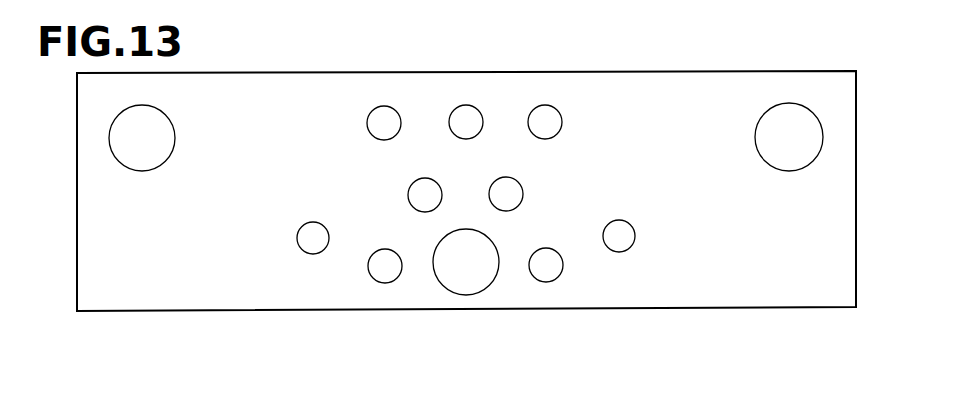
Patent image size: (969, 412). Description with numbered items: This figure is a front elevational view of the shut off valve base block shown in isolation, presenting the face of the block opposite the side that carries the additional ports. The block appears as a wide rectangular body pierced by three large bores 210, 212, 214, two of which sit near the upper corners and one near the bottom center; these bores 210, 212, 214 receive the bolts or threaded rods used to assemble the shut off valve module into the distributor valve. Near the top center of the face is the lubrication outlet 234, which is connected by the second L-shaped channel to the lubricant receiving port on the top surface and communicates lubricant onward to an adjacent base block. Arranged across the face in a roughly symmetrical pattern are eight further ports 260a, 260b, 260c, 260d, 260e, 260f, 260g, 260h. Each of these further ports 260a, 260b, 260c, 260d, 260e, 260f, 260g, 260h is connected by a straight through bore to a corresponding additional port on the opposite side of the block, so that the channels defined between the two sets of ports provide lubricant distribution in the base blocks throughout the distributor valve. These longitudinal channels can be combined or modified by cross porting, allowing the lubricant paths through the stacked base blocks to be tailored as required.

The bore 210 is at (142, 107).
The bore 212 is at (803, 107).
The bore 214 is at (447, 285).
The lubrication outlet 234 is at (473, 108).
The further port 260a is at (552, 266).
The further port 260b is at (627, 233).
The further port 260c is at (550, 120).
The further port 260d is at (515, 193).
The further port 260e is at (381, 117).
The further port 260f is at (418, 192).
The further port 260g is at (307, 238).
The further port 260h is at (376, 264).